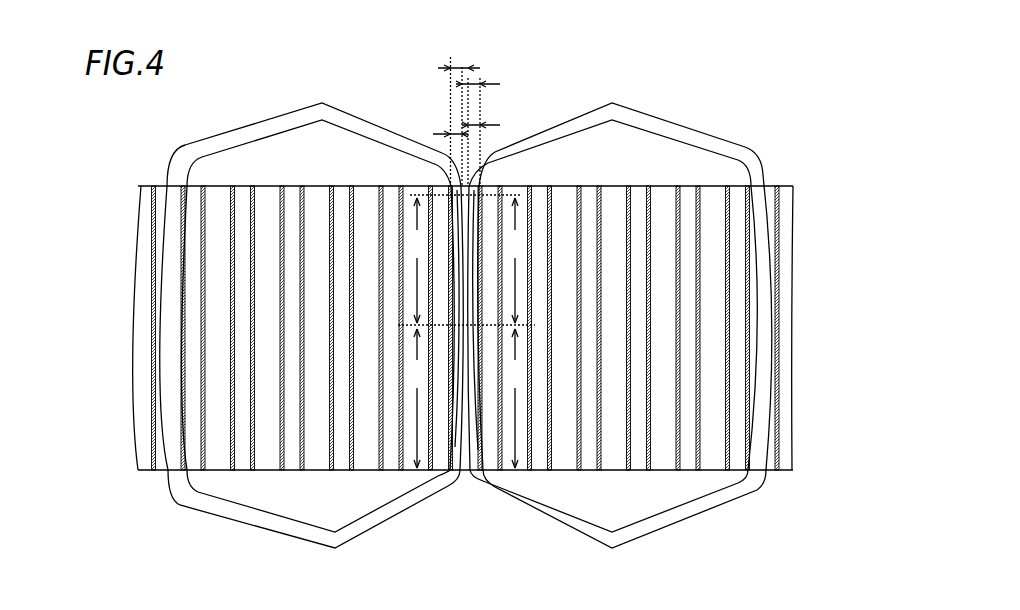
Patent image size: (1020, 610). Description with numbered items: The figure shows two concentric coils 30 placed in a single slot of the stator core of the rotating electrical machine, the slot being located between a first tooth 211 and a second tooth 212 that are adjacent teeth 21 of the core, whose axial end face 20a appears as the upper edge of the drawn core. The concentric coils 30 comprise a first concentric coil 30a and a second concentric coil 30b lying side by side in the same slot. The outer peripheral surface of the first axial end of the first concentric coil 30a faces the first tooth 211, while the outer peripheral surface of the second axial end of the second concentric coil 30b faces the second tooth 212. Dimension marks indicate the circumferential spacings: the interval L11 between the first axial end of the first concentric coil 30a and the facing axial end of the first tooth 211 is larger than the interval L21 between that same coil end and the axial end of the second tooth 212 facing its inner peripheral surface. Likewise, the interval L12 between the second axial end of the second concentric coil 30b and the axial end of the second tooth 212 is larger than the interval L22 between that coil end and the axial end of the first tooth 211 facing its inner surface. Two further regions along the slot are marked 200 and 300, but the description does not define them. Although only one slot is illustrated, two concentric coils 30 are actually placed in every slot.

The axial end face 20a is at (620, 186).
The concentric coil 30 is at (485, 298).
The first concentric coil 30a is at (707, 137).
The second concentric coil 30b is at (343, 115).
The tooth 21 is at (476, 380).
The first tooth 211 is at (455, 447).
The second tooth 212 is at (478, 450).
The first region (distance 200) 200 is at (471, 260).
The second region (distance 300) 300 is at (471, 398).
The interval L11 is at (458, 51).
The interval L12 is at (494, 70).
The interval L21 is at (496, 115).
The interval L22 is at (435, 120).